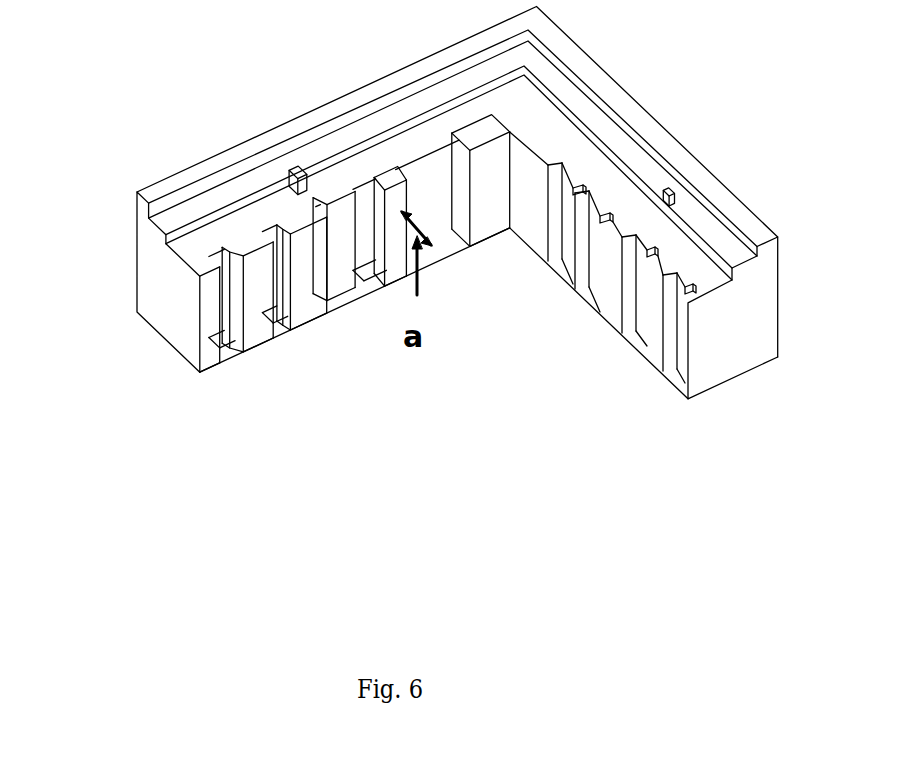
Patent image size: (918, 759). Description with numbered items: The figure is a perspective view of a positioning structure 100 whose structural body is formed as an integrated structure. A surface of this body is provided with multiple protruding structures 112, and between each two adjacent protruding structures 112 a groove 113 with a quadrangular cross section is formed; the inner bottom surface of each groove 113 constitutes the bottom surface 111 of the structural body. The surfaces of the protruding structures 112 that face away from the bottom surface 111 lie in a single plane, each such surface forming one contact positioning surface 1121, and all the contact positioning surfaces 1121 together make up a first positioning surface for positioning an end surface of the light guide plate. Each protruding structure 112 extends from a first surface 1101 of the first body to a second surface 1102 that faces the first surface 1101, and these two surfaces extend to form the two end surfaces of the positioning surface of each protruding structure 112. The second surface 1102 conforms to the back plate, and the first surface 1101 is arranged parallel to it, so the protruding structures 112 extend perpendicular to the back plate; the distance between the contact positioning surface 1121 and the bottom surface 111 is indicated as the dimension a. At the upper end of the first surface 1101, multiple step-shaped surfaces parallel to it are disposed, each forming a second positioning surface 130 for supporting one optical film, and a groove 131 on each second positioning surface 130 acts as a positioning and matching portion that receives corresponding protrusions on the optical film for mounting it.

The positioning structure 100 is at (383, 355).
The first surface 1101 is at (197, 268).
The second surface 1102 is at (212, 366).
The bottom surface 111 is at (223, 294).
The protruding structure 112 is at (305, 275).
The groove 113 is at (334, 197).
The contact positioning surface 1121 is at (430, 206).
The second positioning surface 130 is at (377, 126).
The groove 131 is at (260, 201).